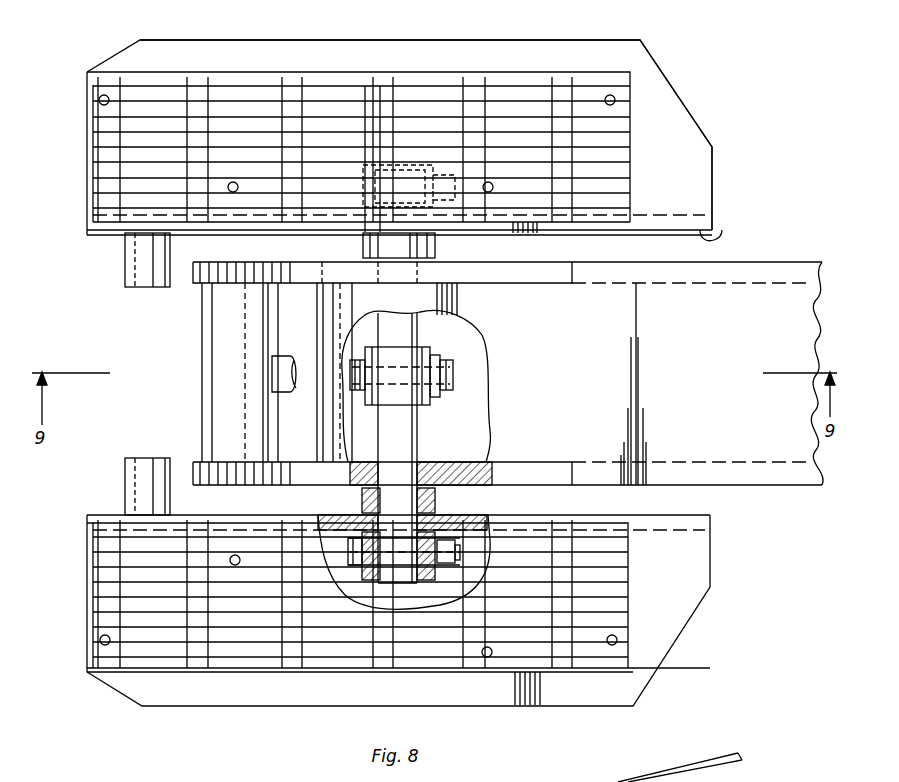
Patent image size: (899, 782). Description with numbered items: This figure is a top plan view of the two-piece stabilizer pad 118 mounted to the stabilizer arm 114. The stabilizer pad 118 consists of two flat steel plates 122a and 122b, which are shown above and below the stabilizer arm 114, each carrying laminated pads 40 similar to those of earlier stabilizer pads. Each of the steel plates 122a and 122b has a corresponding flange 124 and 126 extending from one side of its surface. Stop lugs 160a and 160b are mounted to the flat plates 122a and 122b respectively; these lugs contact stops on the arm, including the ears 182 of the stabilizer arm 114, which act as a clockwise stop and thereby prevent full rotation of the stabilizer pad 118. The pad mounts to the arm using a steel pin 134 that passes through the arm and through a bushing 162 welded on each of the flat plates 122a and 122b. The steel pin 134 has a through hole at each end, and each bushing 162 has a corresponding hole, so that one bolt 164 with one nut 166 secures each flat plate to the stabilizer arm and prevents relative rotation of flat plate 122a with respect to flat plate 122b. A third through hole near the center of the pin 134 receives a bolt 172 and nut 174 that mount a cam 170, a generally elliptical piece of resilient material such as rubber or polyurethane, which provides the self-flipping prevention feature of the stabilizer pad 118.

The two-piece stabilizer pad 118 is at (100, 65).
The laminated pad 40 is at (634, 93).
The steel plate 122b is at (709, 138).
The flange 126 is at (718, 238).
The stabilizer arm 114 is at (790, 261).
The bushing 162 is at (437, 246).
The stop lug 160b is at (128, 258).
The stop lug 160a is at (135, 482).
The ears 182 is at (240, 287).
The steel pin 134 is at (420, 337).
The cam 170 is at (432, 350).
The bolt 172 is at (455, 376).
The nut 174 is at (440, 398).
The bolt 164 is at (355, 548).
The nut 166 is at (455, 566).
The flange 124 is at (692, 515).
The steel plate 122a is at (670, 641).